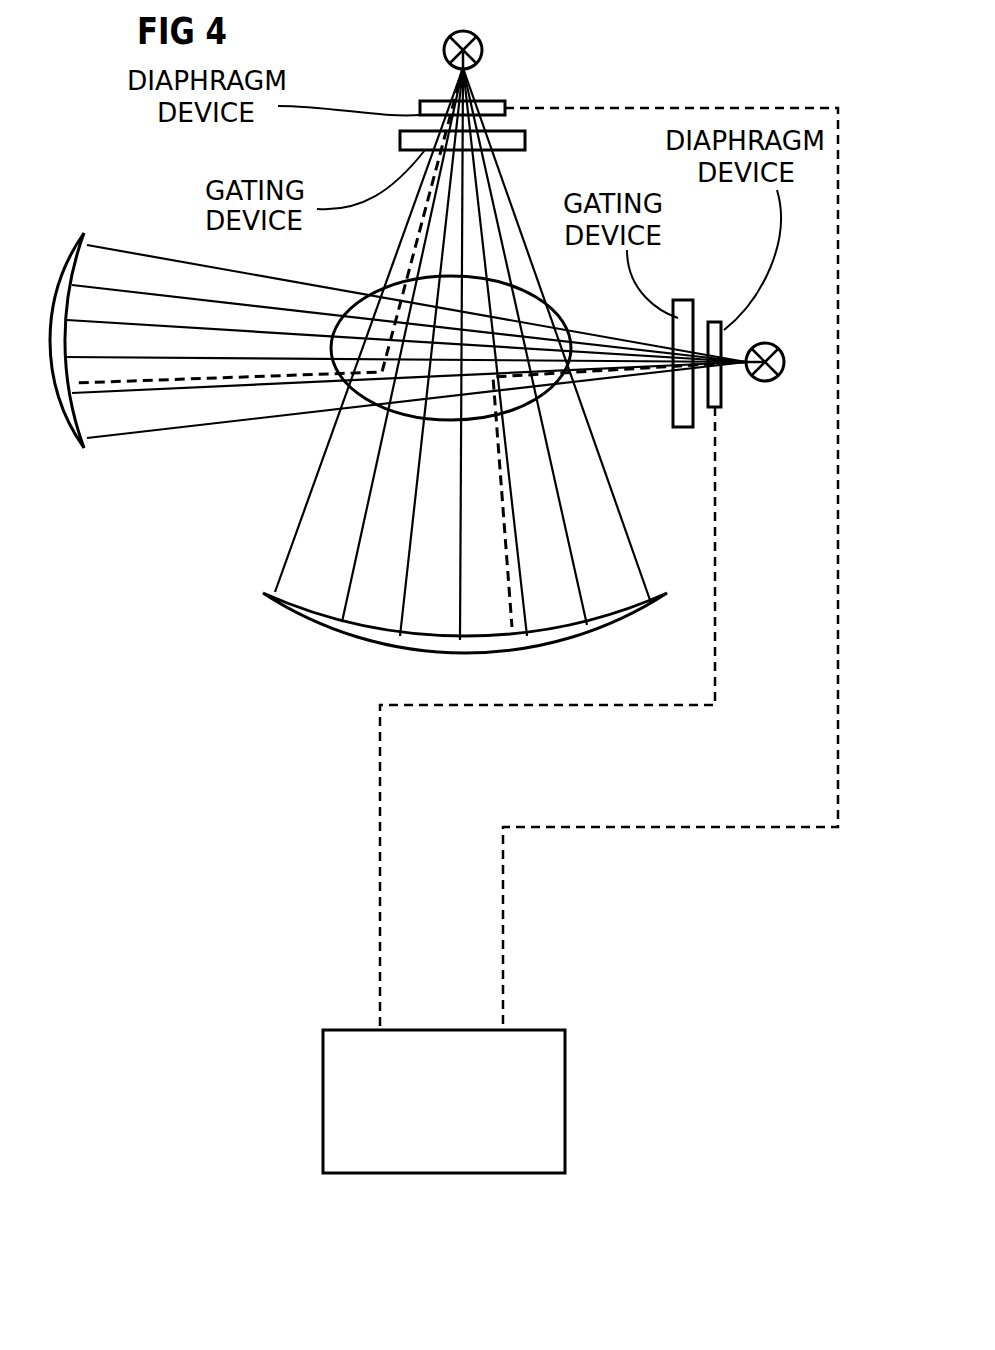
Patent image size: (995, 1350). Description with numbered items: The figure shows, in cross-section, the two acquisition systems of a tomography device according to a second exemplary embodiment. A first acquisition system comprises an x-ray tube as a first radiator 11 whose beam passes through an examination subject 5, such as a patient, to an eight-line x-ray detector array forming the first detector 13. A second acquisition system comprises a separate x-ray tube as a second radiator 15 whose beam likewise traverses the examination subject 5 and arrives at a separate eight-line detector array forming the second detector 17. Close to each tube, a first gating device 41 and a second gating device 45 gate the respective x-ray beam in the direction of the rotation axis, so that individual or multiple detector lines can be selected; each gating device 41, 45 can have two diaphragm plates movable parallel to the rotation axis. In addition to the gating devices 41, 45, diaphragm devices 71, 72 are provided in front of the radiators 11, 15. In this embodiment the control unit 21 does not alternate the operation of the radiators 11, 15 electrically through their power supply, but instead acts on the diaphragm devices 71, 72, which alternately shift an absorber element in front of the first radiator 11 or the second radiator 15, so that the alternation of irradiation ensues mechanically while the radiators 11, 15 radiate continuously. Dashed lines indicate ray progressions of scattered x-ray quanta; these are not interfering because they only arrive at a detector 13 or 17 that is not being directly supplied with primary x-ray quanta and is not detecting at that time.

The first radiator 11 is at (483, 54).
The second radiator 15 is at (772, 380).
The diaphragm device 71 is at (420, 108).
The first gating device 41 is at (400, 141).
The second gating device 45 is at (681, 318).
The diaphragm device 72 is at (716, 340).
The examination subject 5 is at (565, 322).
The second detector 17 is at (86, 448).
The first detector 13 is at (272, 593).
The control unit 21 is at (565, 1103).